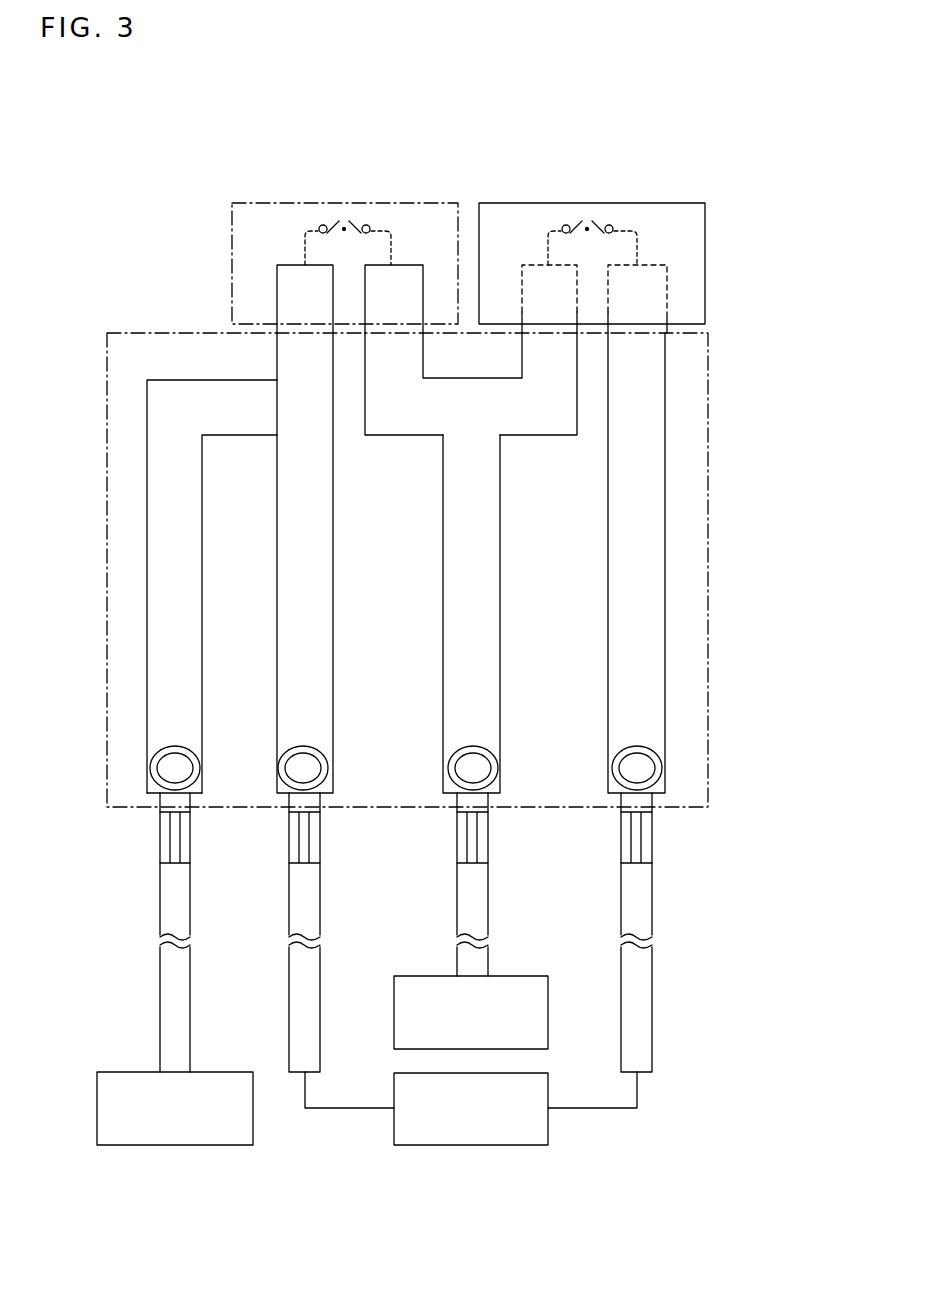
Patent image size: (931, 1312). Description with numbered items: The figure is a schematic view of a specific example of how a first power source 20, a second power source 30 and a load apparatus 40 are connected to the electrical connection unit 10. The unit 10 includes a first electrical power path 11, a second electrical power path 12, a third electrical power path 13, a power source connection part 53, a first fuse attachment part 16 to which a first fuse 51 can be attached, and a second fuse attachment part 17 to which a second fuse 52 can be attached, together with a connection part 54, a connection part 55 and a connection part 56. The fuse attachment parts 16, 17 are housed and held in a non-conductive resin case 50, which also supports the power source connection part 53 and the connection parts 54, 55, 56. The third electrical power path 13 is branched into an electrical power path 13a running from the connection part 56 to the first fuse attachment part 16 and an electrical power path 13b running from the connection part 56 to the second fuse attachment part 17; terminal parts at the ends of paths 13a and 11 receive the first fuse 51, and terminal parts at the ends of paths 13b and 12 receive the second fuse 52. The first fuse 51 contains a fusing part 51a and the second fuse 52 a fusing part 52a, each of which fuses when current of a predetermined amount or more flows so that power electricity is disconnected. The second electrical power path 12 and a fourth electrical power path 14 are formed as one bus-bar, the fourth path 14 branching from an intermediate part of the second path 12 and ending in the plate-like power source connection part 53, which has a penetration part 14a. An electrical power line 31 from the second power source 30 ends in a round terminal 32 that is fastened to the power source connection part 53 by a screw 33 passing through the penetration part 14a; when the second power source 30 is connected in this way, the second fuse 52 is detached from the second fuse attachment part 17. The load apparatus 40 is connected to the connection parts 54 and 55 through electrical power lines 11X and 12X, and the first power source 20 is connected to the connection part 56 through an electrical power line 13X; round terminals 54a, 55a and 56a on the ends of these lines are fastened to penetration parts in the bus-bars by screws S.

The electrical connection unit 10 is at (748, 182).
The first electrical power path 11 is at (625, 530).
The second electrical power path 12 is at (313, 560).
The third electrical power path 13 is at (471, 563).
The electrical power path 13a is at (528, 420).
The electrical power path 13b is at (404, 420).
The fourth electrical power path 14 is at (160, 586).
The penetration part 14a is at (148, 760).
The first fuse attachment part 16 is at (630, 300).
The second fuse attachment part 17 is at (388, 300).
The first power source 20 is at (515, 975).
The second power source 30 is at (167, 1148).
The electrical power line 31 is at (167, 893).
The round terminal 32 is at (149, 758).
The screw 33 is at (195, 752).
The load apparatus 40 is at (509, 1148).
The case 50 is at (160, 330).
The first fuse 51 is at (592, 227).
The fusing part 51a is at (590, 226).
The second fuse 52 is at (345, 227).
The fusing part 52a is at (346, 226).
The power source connection part 53 is at (152, 785).
The connection part 54 is at (612, 790).
The round terminal 54a is at (655, 752).
The connection part 55 is at (280, 790).
The round terminal 55a is at (318, 752).
The connection part 56 is at (450, 790).
The round terminal 56a is at (488, 752).
The electrical power line 11X is at (630, 902).
The electrical power line 12X is at (300, 902).
The electrical power line 13X is at (460, 902).
The screw S is at (328, 768).